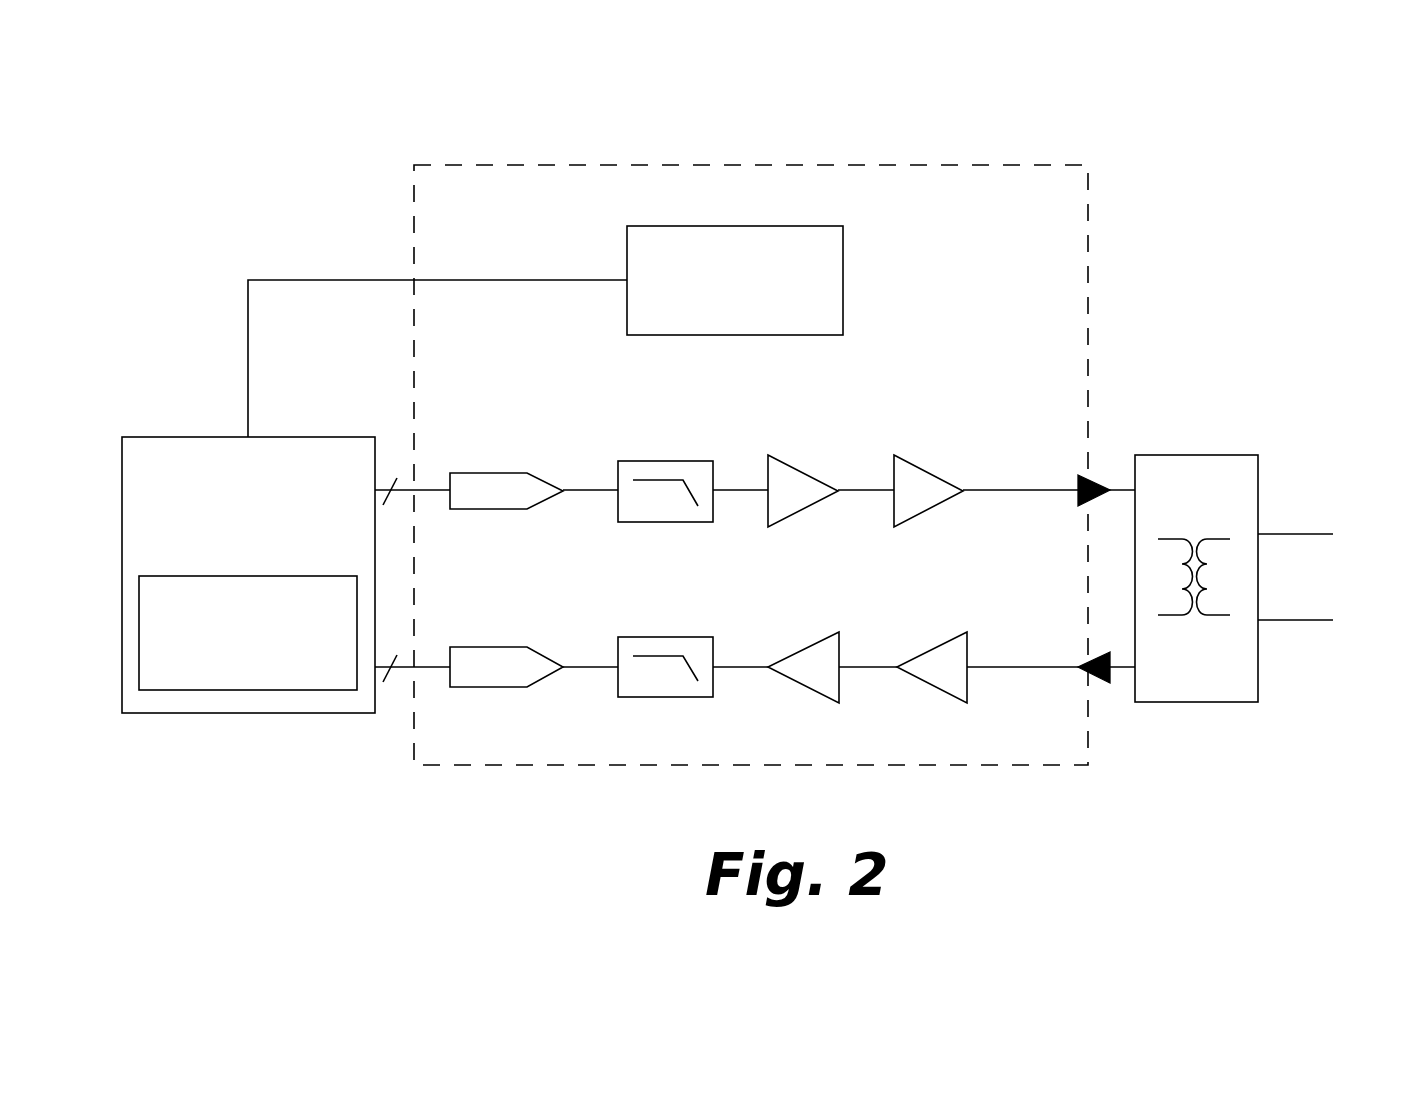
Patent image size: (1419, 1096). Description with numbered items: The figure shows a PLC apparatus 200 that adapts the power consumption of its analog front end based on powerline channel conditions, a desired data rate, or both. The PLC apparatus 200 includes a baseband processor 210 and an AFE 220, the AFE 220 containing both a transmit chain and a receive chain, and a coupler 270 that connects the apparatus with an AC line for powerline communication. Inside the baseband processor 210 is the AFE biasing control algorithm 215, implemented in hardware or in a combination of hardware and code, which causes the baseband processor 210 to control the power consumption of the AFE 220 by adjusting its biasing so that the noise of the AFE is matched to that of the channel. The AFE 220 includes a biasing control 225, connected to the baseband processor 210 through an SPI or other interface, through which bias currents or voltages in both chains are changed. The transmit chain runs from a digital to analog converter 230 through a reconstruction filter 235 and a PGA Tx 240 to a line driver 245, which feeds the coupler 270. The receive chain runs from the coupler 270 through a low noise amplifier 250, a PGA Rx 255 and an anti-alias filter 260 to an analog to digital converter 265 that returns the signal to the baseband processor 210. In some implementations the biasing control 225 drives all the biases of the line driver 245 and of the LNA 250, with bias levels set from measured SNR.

The PLC apparatus 200 is at (1278, 107).
The baseband processor 210 is at (202, 437).
The AFE biasing control algorithm 215 is at (255, 690).
The analog front end (AFE) 220 is at (987, 165).
The biasing control 225 is at (735, 226).
The digital to analog converter (DAC) 230 is at (478, 473).
The reconstruction filter 235 is at (667, 461).
The PGA Tx 240 is at (783, 455).
The line driver 245 is at (910, 455).
The low noise amplifier (LNA) 250 is at (965, 632).
The PGA Rx 255 is at (838, 632).
The anti-alias filter 260 is at (667, 637).
The analog to digital converter (ADC) 265 is at (478, 647).
The coupler 270 is at (1197, 455).